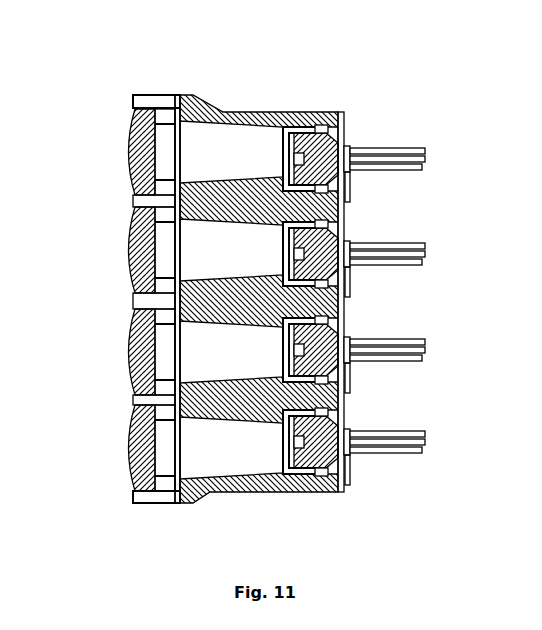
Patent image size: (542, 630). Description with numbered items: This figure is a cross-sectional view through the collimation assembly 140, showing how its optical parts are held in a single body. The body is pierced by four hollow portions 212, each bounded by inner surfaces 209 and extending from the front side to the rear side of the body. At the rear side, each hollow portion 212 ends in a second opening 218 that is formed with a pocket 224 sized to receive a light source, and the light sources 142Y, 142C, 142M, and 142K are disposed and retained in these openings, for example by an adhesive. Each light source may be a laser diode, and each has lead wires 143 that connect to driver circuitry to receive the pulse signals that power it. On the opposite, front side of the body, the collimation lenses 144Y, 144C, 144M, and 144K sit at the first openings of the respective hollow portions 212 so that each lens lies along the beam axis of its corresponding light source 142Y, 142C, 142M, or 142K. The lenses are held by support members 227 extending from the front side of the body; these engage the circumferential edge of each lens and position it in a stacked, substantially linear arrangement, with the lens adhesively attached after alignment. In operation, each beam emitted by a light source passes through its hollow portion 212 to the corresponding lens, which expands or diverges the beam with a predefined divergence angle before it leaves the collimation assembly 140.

The collimation assembly 140 is at (133, 41).
The light source 142Y is at (341, 138).
The light source 142C is at (342, 240).
The light source 142M is at (343, 330).
The light source 142K is at (343, 458).
The lead wires 143 is at (426, 150).
The collimation lens 144Y is at (127, 151).
The collimation lens 144C is at (127, 246).
The collimation lens 144M is at (127, 355).
The collimation lens 144K is at (127, 452).
The inner surface 209 is at (238, 134).
The hollow portion 212 is at (243, 163).
The second opening 218 is at (335, 128).
The pocket 224 is at (328, 194).
The support member 227 is at (163, 101).